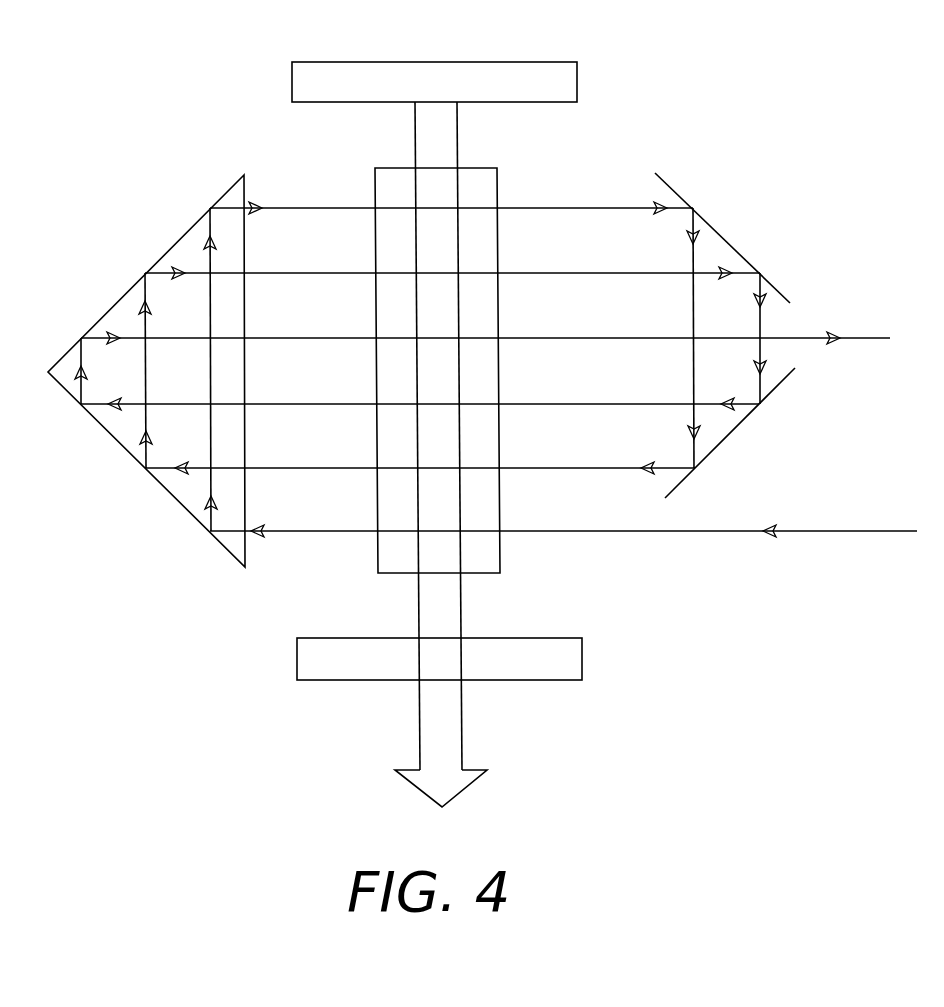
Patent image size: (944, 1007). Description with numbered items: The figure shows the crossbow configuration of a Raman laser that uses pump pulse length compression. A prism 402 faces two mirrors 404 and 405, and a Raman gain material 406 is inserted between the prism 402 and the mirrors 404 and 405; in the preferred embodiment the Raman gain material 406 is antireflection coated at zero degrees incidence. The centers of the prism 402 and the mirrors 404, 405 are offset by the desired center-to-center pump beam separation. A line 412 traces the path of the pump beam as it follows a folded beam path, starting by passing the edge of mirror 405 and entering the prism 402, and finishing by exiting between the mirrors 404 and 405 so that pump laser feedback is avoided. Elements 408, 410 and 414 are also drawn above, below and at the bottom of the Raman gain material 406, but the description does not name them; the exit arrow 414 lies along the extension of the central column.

The prism 402 is at (173, 248).
The mirror 404 is at (725, 235).
The mirror 405 is at (732, 430).
The Raman gain material 406 is at (497, 185).
The upper pump / reflector element 408 is at (577, 80).
The lower pump / reflector element 410 is at (582, 660).
The line 412 is at (825, 531).
The output arrow / pump beam direction 414 is at (463, 750).